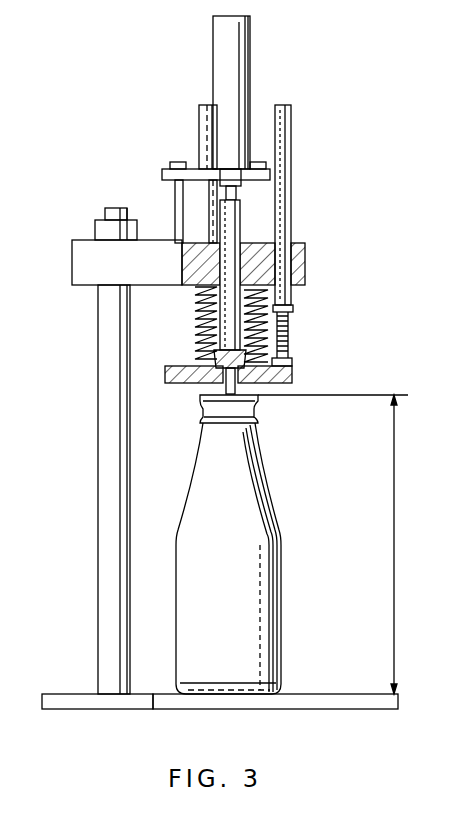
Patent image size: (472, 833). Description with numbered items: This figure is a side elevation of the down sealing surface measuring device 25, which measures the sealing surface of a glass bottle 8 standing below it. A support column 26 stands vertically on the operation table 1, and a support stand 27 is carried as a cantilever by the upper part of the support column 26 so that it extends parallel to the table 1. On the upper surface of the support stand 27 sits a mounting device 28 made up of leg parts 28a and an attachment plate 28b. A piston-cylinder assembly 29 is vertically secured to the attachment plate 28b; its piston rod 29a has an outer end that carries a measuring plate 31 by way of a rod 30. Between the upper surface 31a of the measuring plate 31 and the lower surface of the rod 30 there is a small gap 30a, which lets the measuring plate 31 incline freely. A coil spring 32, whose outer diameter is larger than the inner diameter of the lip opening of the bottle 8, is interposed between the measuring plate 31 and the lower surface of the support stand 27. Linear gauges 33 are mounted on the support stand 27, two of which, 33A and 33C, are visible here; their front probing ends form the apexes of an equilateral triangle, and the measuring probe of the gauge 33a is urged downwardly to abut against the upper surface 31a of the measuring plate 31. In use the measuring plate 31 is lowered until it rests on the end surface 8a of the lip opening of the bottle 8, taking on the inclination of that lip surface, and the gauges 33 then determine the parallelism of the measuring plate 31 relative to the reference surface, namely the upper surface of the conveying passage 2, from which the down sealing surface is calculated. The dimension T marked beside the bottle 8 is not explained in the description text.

The operation table 1 is at (68, 696).
The conveying passage 2 is at (325, 698).
The glass bottle 8 is at (283, 548).
The end surface of the lip opening 8a is at (258, 396).
The down sealing surface measuring device 25 is at (322, 258).
The support column 26 is at (98, 520).
The support stand 27 is at (88, 250).
The mounting device 28 is at (140, 158).
The leg parts 28a is at (175, 192).
The attachment plate 28b is at (177, 164).
The piston-cylinder assembly 29 is at (256, 42).
The piston rod 29a is at (241, 192).
The rod 30 is at (225, 229).
The small gap 30a is at (214, 372).
The measuring plate 31 is at (292, 373).
The upper surface of the measuring plate 31a is at (182, 367).
The coil spring 32 is at (200, 325).
The linear gauges 33 is at (291, 146).
The linear gauge 33A is at (291, 110).
The linear gauge 33C is at (200, 108).
The linear gauge 33a is at (283, 355).
The height dimension T is at (333, 544).